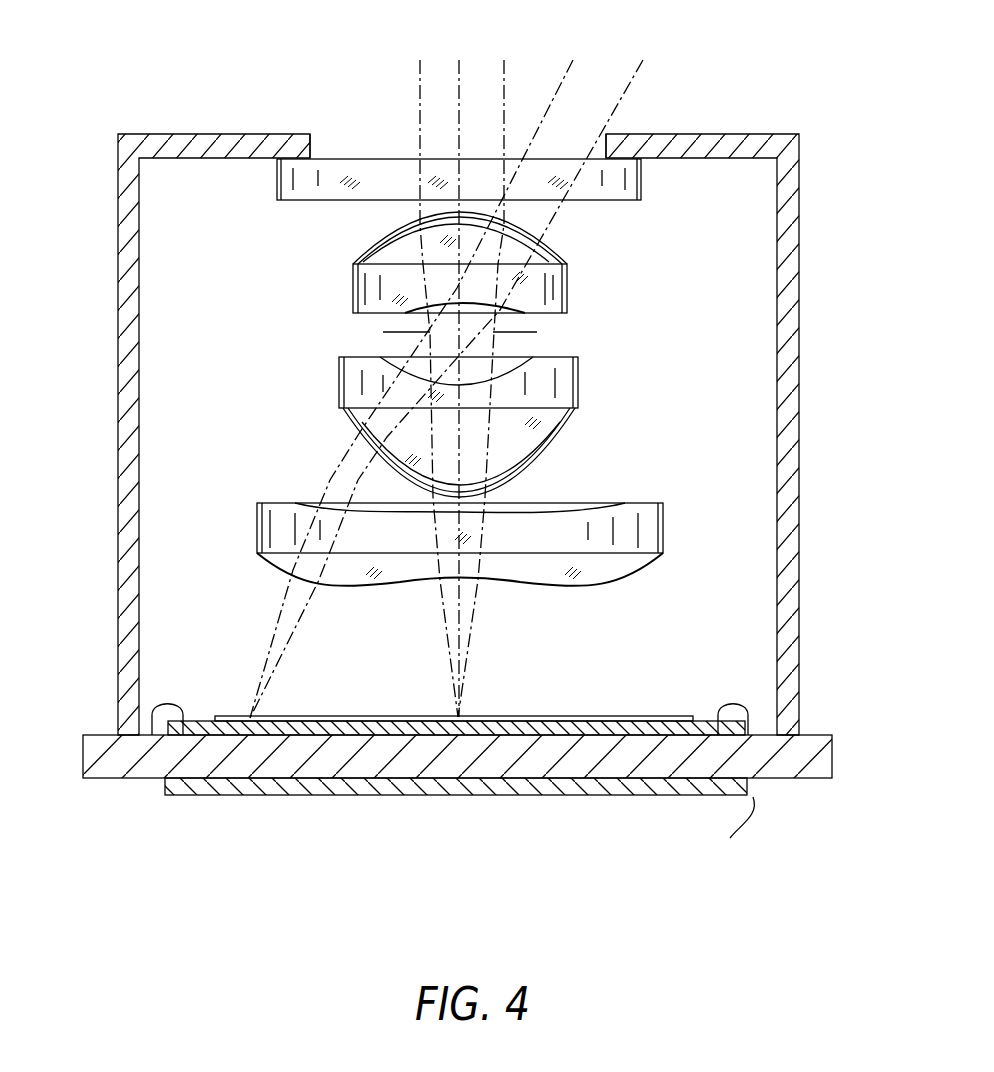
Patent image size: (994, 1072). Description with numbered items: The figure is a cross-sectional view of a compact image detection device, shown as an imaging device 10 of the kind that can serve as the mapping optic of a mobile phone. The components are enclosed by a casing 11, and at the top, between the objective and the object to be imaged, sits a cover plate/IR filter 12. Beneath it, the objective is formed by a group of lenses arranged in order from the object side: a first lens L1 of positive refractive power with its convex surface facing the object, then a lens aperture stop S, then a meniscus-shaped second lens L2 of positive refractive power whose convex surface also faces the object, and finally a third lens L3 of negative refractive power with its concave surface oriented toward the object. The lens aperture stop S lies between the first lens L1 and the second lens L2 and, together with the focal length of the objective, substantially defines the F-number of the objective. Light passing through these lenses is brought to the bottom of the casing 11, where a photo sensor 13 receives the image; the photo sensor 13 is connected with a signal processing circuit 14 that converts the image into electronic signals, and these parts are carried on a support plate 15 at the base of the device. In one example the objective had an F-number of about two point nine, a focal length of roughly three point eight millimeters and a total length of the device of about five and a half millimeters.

The imaging device 10 is at (185, 351).
The casing 11 is at (797, 453).
The cover plate/IR filter 12 is at (378, 158).
The photo sensor 13 is at (552, 722).
The signal processing circuit 14 is at (702, 728).
The support plate 15 is at (805, 768).
The first lens L1 is at (568, 280).
The second lens L2 is at (580, 392).
The third lens L3 is at (665, 535).
The lens aperture stop S is at (537, 332).